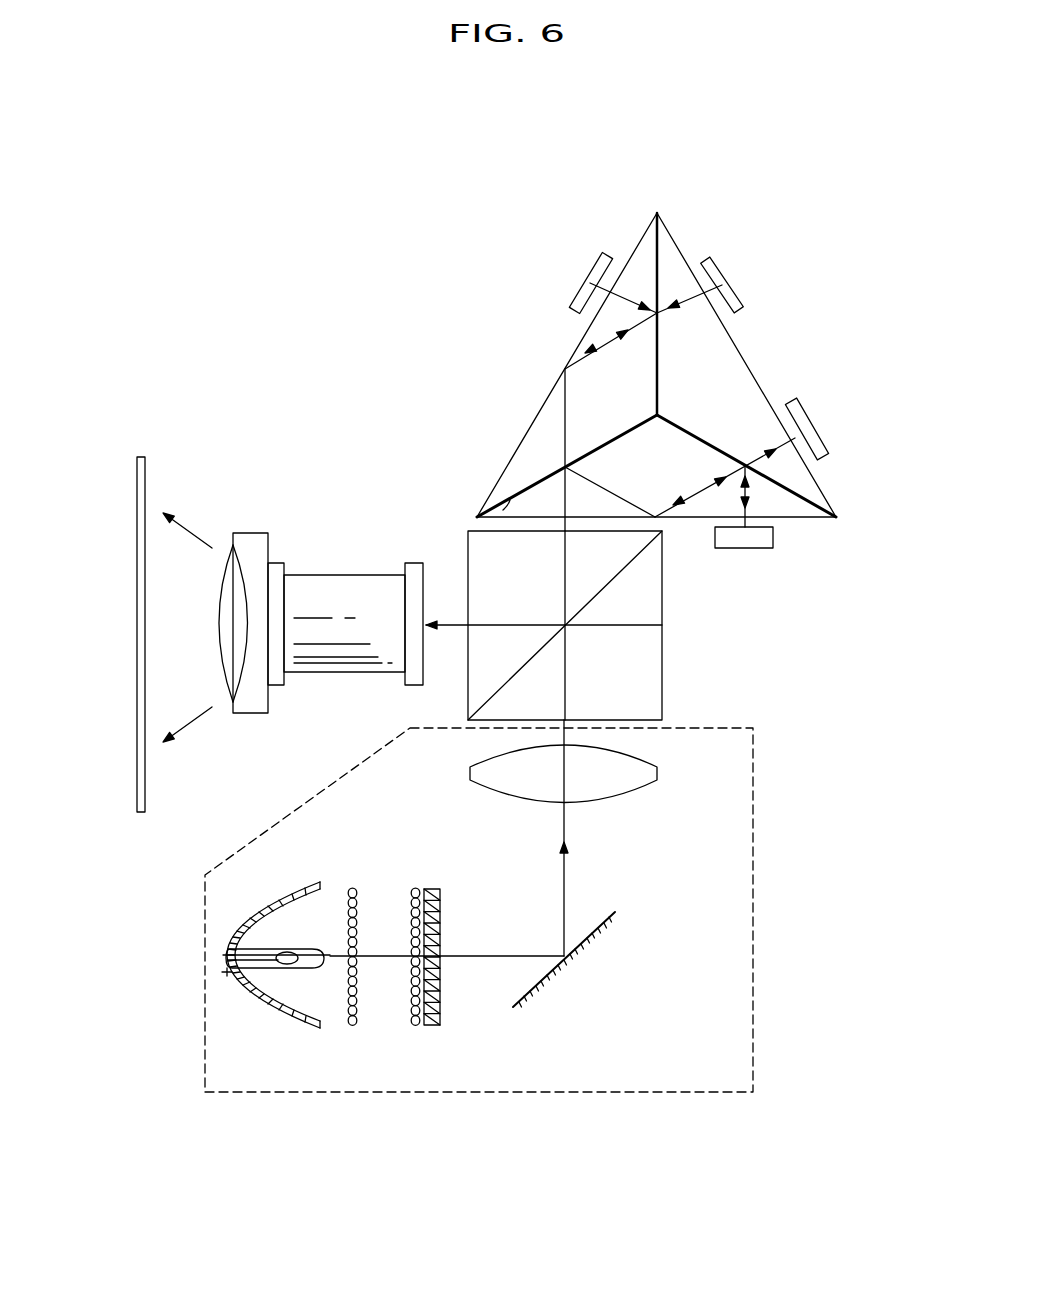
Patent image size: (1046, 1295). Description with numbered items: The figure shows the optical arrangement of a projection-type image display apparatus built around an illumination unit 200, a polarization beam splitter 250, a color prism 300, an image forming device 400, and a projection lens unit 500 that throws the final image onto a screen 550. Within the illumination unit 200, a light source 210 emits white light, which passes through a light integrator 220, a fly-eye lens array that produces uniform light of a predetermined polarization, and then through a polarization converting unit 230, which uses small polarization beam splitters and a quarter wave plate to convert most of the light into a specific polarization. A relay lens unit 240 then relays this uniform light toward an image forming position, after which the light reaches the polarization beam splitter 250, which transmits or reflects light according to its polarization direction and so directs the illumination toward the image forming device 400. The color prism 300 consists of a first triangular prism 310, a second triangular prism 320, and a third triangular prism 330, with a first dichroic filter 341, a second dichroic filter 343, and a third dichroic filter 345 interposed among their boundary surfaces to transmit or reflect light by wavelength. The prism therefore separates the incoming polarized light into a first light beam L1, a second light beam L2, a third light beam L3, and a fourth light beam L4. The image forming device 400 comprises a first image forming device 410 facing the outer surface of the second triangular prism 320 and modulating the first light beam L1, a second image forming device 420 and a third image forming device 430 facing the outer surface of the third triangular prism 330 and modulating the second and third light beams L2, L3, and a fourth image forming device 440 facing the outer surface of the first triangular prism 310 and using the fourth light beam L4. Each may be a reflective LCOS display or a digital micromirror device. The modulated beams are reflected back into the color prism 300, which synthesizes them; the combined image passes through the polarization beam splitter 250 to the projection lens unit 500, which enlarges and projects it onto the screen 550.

The illumination unit 200 is at (753, 836).
The light source 210 is at (283, 1020).
The light integrator 220 is at (416, 1028).
The polarization converting unit 230 is at (432, 1028).
The relay lens unit 240 is at (657, 775).
The polarization beam splitter 250 is at (662, 710).
The color prism 300 is at (623, 400).
The first triangular prism 310 is at (476, 518).
The second triangular prism 320 is at (548, 422).
The third triangular prism 330 is at (750, 413).
The first dichroic filter 341 is at (520, 490).
The second dichroic filter 343 is at (659, 348).
The third dichroic filter 345 is at (697, 443).
The image forming device 400 is at (690, 380).
The first image forming device 410 is at (578, 287).
The second image forming device 420 is at (717, 273).
The third image forming device 430 is at (807, 422).
The fourth image forming device 440 is at (760, 548).
The projection lens unit 500 is at (249, 742).
The screen 550 is at (137, 782).
The first light beam L1 is at (633, 296).
The second light beam L2 is at (681, 294).
The third light beam L3 is at (755, 465).
The fourth light beam L4 is at (752, 503).